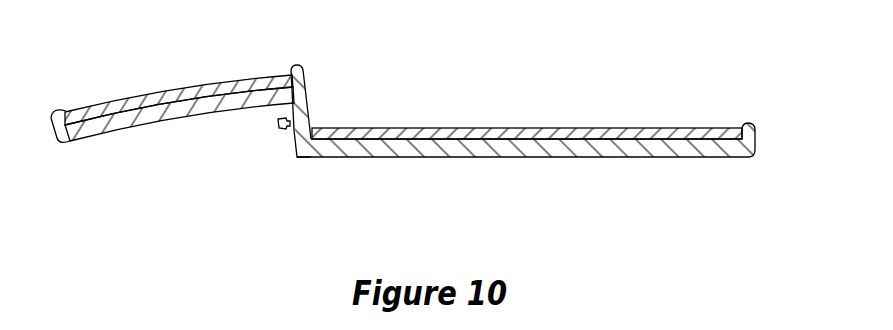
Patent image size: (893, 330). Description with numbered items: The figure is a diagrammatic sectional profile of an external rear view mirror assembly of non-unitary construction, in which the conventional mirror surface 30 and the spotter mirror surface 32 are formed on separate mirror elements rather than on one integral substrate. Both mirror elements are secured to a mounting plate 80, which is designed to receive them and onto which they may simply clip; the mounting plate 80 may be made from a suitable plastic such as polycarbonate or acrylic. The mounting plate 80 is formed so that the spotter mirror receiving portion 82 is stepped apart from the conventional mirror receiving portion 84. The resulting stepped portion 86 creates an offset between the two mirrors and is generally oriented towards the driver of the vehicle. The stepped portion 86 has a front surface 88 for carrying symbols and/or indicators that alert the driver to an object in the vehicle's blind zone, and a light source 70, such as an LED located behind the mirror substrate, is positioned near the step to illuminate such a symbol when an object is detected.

The conventional mirror surface 30 is at (455, 128).
The spotter mirror surface 32 is at (150, 92).
The light source 70 is at (277, 126).
The mounting plate 80 is at (405, 157).
The spotter mirror receiving portion 82 is at (137, 126).
The conventional mirror receiving portion 84 is at (611, 157).
The stepped portion 86 is at (295, 146).
The front surface 88 is at (307, 94).